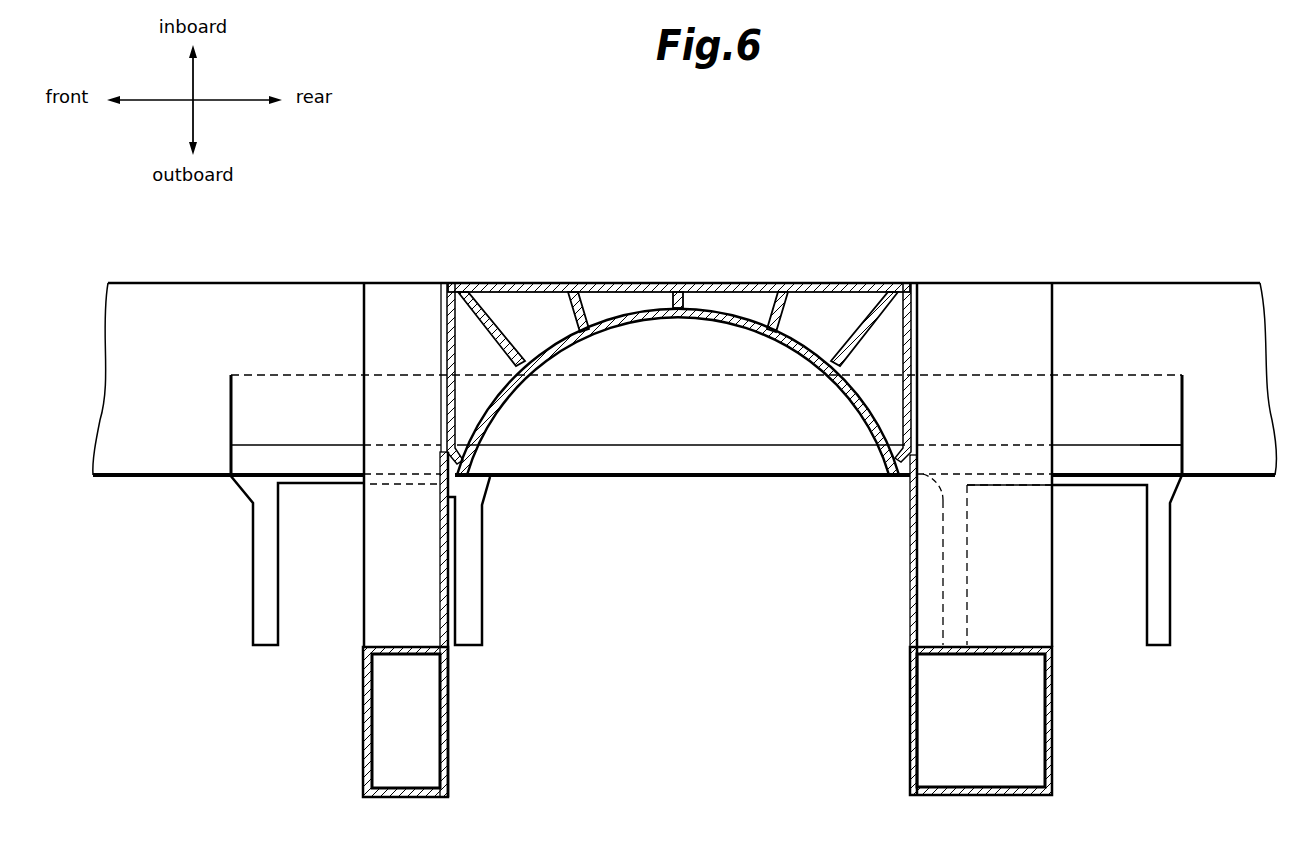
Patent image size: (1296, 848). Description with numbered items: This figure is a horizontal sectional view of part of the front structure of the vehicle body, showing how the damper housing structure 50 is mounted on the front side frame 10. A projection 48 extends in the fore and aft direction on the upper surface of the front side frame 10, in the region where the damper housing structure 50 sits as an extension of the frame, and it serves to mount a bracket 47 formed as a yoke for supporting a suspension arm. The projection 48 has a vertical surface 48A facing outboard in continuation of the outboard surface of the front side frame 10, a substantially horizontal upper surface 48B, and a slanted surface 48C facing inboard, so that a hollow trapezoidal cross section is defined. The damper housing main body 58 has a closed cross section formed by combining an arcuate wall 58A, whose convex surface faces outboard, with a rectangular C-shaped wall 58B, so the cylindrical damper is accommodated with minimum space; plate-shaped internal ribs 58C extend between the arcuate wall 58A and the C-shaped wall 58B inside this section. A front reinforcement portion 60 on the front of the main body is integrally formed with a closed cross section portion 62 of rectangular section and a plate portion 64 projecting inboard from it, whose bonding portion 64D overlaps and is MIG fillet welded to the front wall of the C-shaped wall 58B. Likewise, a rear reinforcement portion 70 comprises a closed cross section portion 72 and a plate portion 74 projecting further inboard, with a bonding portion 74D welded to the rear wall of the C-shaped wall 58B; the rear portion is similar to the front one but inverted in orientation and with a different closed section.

The front side frame 10 is at (1146, 304).
The bracket 47 is at (473, 581).
The projection 48 is at (745, 426).
The vertical surface 48A is at (1097, 478).
The upper surface 48B is at (1172, 466).
The slanted surface 48C is at (1173, 413).
The damper housing structure 50 is at (468, 275).
The damper housing main body 58 is at (679, 363).
The arcuate wall 58A is at (593, 337).
The rectangular C-shaped wall 58B is at (532, 283).
The internal ribs 58C is at (667, 303).
The front reinforcement portion 60 is at (354, 725).
The closed cross section portion 62 is at (362, 738).
The plate portion 64 is at (379, 519).
The bonding portion 64D is at (442, 325).
The rear reinforcement portion 70 is at (939, 719).
The closed cross section portion 72 is at (906, 728).
The plate portion 74 is at (918, 515).
The bonding portion 74D is at (914, 340).